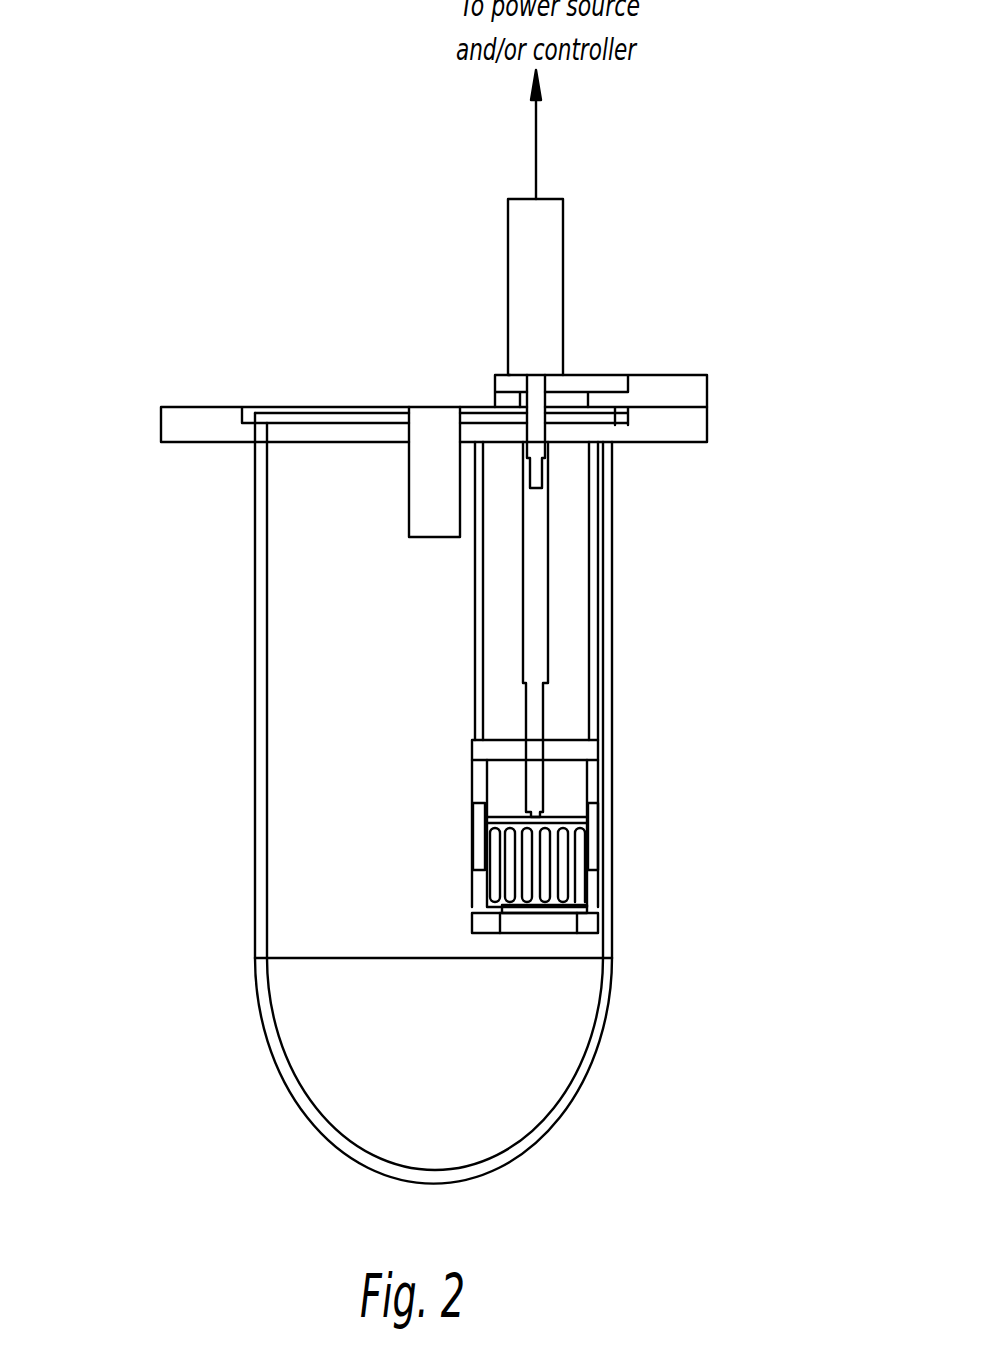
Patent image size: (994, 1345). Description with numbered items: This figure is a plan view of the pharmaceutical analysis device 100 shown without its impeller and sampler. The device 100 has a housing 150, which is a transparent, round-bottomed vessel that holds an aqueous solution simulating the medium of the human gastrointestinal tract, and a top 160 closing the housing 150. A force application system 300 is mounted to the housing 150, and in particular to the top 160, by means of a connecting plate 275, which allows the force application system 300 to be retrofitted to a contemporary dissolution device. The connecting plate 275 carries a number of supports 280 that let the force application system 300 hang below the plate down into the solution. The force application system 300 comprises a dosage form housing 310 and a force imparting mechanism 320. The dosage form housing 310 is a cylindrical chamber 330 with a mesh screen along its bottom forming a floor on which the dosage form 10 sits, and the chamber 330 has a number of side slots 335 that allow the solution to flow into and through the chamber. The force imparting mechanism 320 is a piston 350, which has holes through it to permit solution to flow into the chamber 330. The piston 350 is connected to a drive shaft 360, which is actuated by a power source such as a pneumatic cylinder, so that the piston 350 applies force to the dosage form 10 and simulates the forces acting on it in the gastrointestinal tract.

The pharmaceutical analysis device 100 is at (738, 148).
The housing 150 is at (255, 720).
The top 160 is at (203, 415).
The connecting plate 275 is at (665, 375).
The supports 280 is at (600, 492).
The force application system 300 is at (390, 771).
The dosage form housing 310 is at (480, 890).
The force imparting mechanism 320 is at (563, 763).
The cylindrical chamber 330 is at (537, 897).
The side slots 335 is at (563, 842).
The piston 350 is at (510, 757).
The drive shaft 360 is at (537, 697).
The dosage form 10 is at (573, 870).